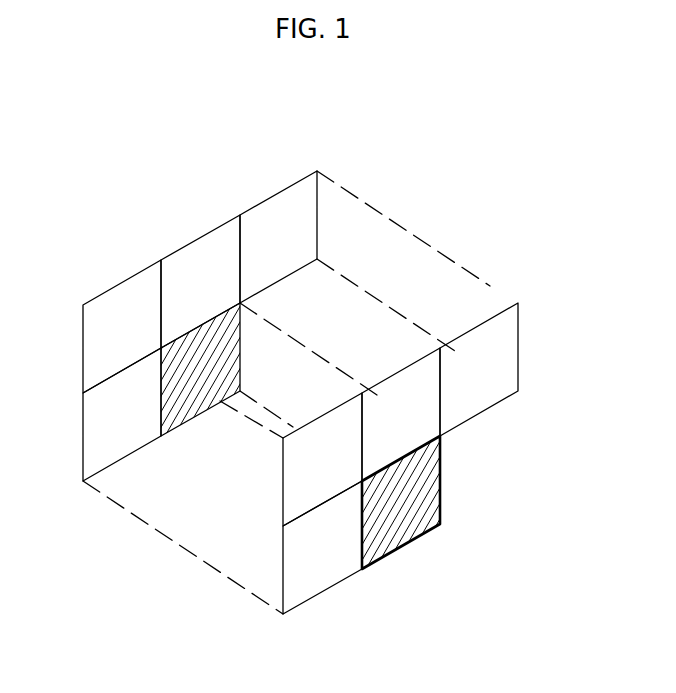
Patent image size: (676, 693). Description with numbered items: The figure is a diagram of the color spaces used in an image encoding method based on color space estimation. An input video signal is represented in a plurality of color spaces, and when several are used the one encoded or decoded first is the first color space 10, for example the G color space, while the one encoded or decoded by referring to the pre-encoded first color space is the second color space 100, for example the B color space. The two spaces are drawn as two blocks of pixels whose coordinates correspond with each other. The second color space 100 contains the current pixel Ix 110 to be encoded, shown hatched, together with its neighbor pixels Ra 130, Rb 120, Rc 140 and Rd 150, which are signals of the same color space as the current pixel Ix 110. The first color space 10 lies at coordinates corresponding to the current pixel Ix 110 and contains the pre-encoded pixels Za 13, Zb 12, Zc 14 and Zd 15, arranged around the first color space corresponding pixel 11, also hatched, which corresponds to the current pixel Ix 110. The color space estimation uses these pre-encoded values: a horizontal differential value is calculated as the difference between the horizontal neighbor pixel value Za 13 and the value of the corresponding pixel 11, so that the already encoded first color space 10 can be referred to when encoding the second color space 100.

The first color space 10 is at (163, 289).
The first color space corresponding pixel 11 is at (185, 421).
The pre-encoded pixel Zb 12 is at (198, 246).
The horizontal neighbor pixel Za 13 is at (90, 432).
The pre-encoded pixel Zc 14 is at (122, 293).
The pre-encoded pixel Zd 15 is at (277, 198).
The second color space 100 is at (416, 438).
The current pixel Ix 110 is at (402, 540).
The neighbor pixel Rb 120 is at (413, 378).
The neighbor pixel Ra 130 is at (323, 583).
The neighbor pixel Rc 140 is at (290, 505).
The neighbor pixel Rd 150 is at (517, 347).